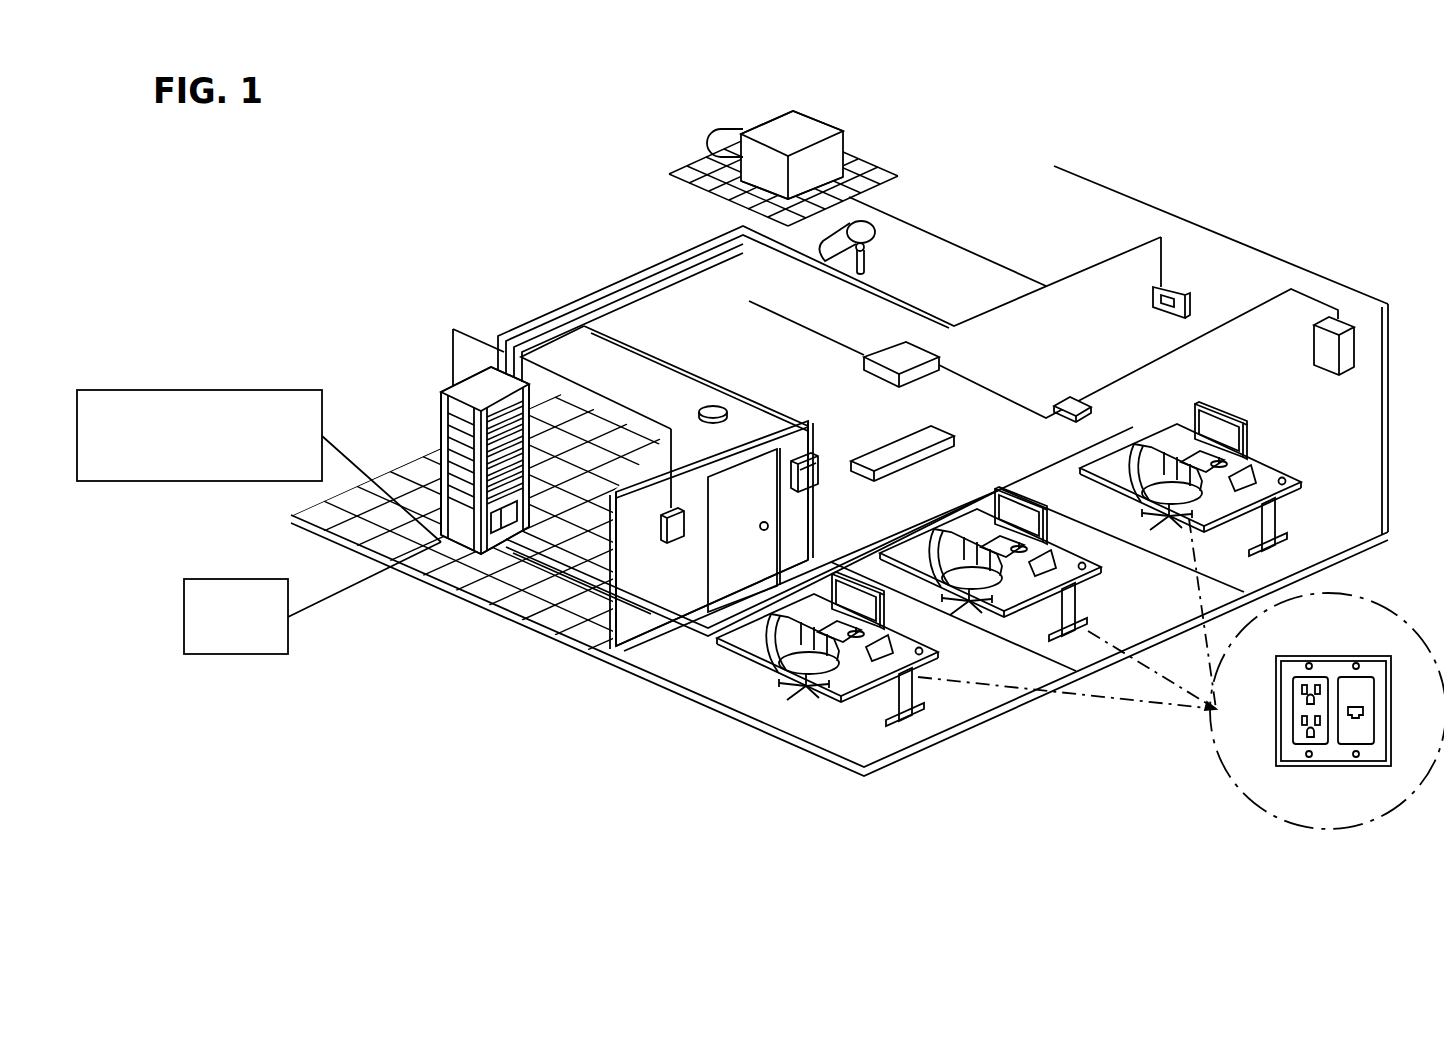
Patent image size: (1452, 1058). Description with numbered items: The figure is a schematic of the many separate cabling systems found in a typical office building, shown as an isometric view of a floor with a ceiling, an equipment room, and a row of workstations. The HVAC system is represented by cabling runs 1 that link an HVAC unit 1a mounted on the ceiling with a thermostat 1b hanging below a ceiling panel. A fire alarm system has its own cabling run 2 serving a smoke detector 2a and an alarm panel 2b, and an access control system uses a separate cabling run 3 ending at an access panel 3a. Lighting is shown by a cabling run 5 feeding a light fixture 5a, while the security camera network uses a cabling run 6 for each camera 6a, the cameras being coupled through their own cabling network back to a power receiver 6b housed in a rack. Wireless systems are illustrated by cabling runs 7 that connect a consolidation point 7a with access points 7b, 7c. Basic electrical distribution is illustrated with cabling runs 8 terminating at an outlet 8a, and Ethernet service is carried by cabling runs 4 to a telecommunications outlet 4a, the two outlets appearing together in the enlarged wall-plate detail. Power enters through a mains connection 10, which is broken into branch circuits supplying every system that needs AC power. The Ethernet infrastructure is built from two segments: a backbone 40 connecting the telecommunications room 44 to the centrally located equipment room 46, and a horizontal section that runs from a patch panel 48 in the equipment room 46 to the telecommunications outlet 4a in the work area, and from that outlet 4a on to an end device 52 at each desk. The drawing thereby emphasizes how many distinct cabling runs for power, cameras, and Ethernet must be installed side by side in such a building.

The cabling runs 1 is at (933, 236).
The HVAC unit 1a is at (822, 123).
The thermostat 1b is at (1173, 288).
The cabling run 2 is at (545, 372).
The smoke detector 2a is at (711, 419).
The alarm panel 2b is at (672, 546).
The cabling run 3 is at (702, 378).
The access panel 3a is at (807, 483).
The cabling runs 4 is at (574, 585).
The outlet 4a is at (1358, 697).
The cabling run 5 is at (662, 353).
The light fixture 5a is at (897, 453).
The cabling run 6 is at (688, 254).
The camera 6a is at (874, 234).
The power receiver 6b is at (457, 423).
The cabling runs 7 is at (760, 310).
The consolidation point 7a is at (910, 358).
The access point 7b is at (1082, 404).
The access point 7c is at (1330, 350).
The cabling runs 8 is at (819, 548).
The outlet 8a is at (1308, 735).
The mains connection 10 is at (208, 580).
The backbone 40 is at (363, 468).
The telecommunications room 44 is at (198, 390).
The equipment room 46 is at (590, 494).
The patch panel 48 is at (460, 504).
The end device 52 is at (870, 612).